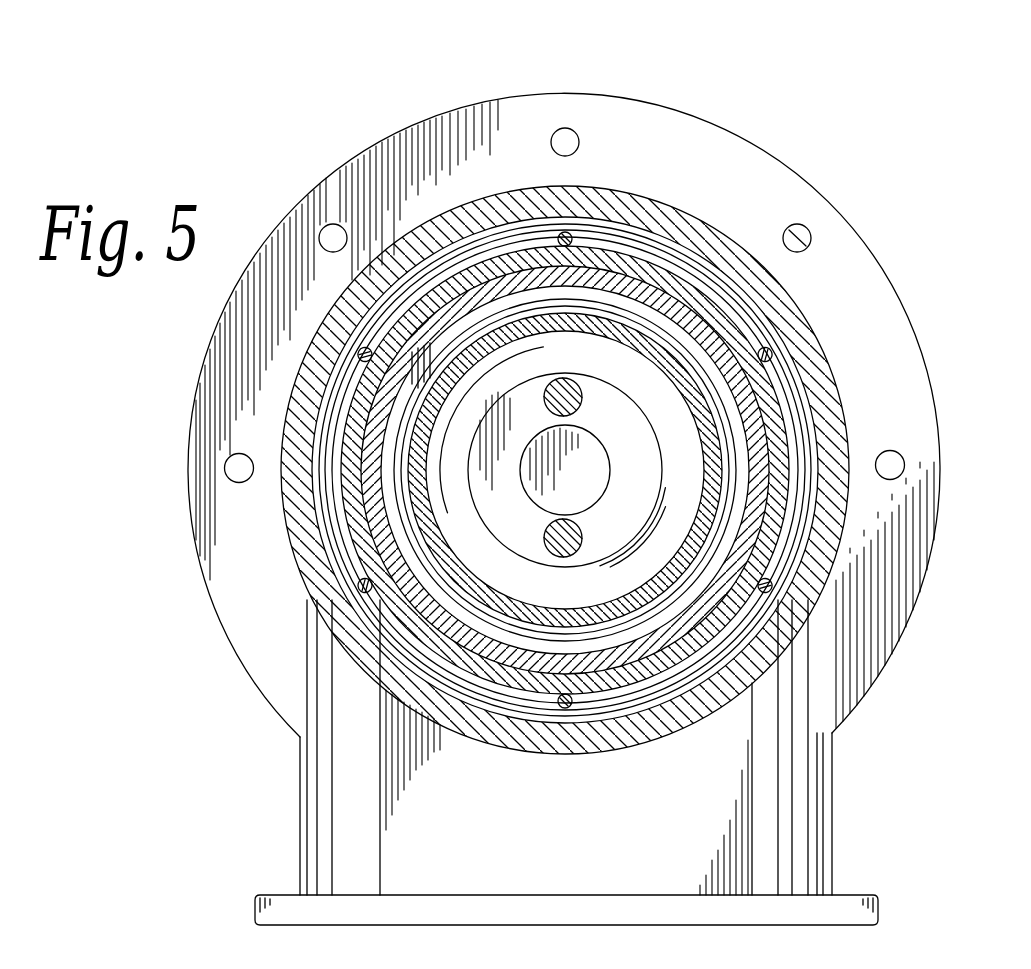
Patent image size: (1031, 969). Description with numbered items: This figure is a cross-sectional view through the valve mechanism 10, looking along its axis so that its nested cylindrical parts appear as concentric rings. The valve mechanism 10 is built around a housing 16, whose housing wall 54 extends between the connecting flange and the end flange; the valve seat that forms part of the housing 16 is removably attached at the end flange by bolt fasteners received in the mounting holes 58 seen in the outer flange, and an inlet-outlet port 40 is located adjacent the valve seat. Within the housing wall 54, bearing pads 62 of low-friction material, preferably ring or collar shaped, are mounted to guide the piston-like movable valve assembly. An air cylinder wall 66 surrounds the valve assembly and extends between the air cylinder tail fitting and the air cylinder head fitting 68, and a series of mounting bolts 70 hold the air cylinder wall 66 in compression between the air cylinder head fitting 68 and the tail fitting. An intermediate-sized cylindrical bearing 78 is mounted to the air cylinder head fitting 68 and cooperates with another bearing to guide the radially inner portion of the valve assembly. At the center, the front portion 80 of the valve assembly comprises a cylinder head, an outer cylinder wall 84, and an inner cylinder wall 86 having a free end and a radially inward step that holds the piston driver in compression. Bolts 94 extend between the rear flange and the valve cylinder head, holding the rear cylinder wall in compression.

The valve mechanism 10 is at (927, 170).
The housing 16 is at (910, 306).
The inlet-outlet port 40 is at (800, 838).
The housing wall 54 is at (687, 232).
The mounting holes 58 is at (806, 247).
The bearing pads 62 is at (473, 708).
The air cylinder wall 66 is at (512, 677).
The air cylinder head fitting 68 is at (540, 668).
The mounting bolts 70 is at (568, 708).
The intermediate-sized cylindrical bearing 78 is at (558, 628).
The front portion 80 is at (596, 470).
The outer cylinder wall 84 is at (640, 708).
The inner cylinder wall 86 is at (486, 596).
The bolts 94 is at (580, 410).